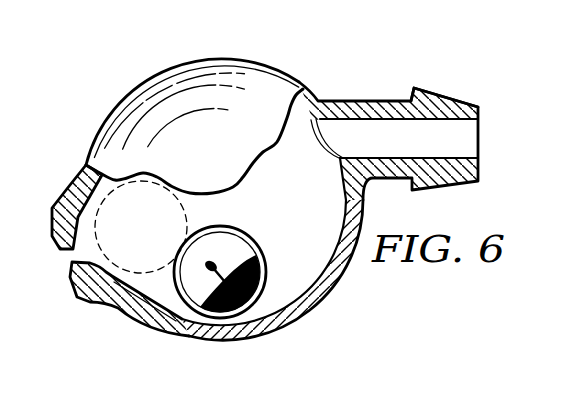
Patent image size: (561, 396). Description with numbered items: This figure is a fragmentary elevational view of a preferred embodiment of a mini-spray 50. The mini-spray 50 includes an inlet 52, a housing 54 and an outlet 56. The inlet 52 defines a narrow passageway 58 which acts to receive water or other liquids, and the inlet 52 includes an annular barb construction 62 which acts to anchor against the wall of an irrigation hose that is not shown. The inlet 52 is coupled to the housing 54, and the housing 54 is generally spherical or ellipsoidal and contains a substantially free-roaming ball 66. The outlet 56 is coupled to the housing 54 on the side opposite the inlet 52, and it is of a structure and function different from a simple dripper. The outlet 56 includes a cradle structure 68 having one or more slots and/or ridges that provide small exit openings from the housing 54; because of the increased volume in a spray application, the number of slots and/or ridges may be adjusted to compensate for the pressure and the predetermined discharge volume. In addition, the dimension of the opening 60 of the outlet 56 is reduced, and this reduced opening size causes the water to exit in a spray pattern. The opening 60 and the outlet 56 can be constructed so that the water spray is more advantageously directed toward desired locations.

The mini-spray 50 is at (88, 103).
The inlet 52 is at (413, 109).
The housing 54 is at (276, 57).
The outlet 56 is at (52, 300).
The narrow passageway 58 is at (430, 148).
The opening 60 is at (56, 258).
The annular barb construction 62 is at (483, 107).
The ball 66 is at (241, 232).
The cradle structure 68 is at (97, 245).